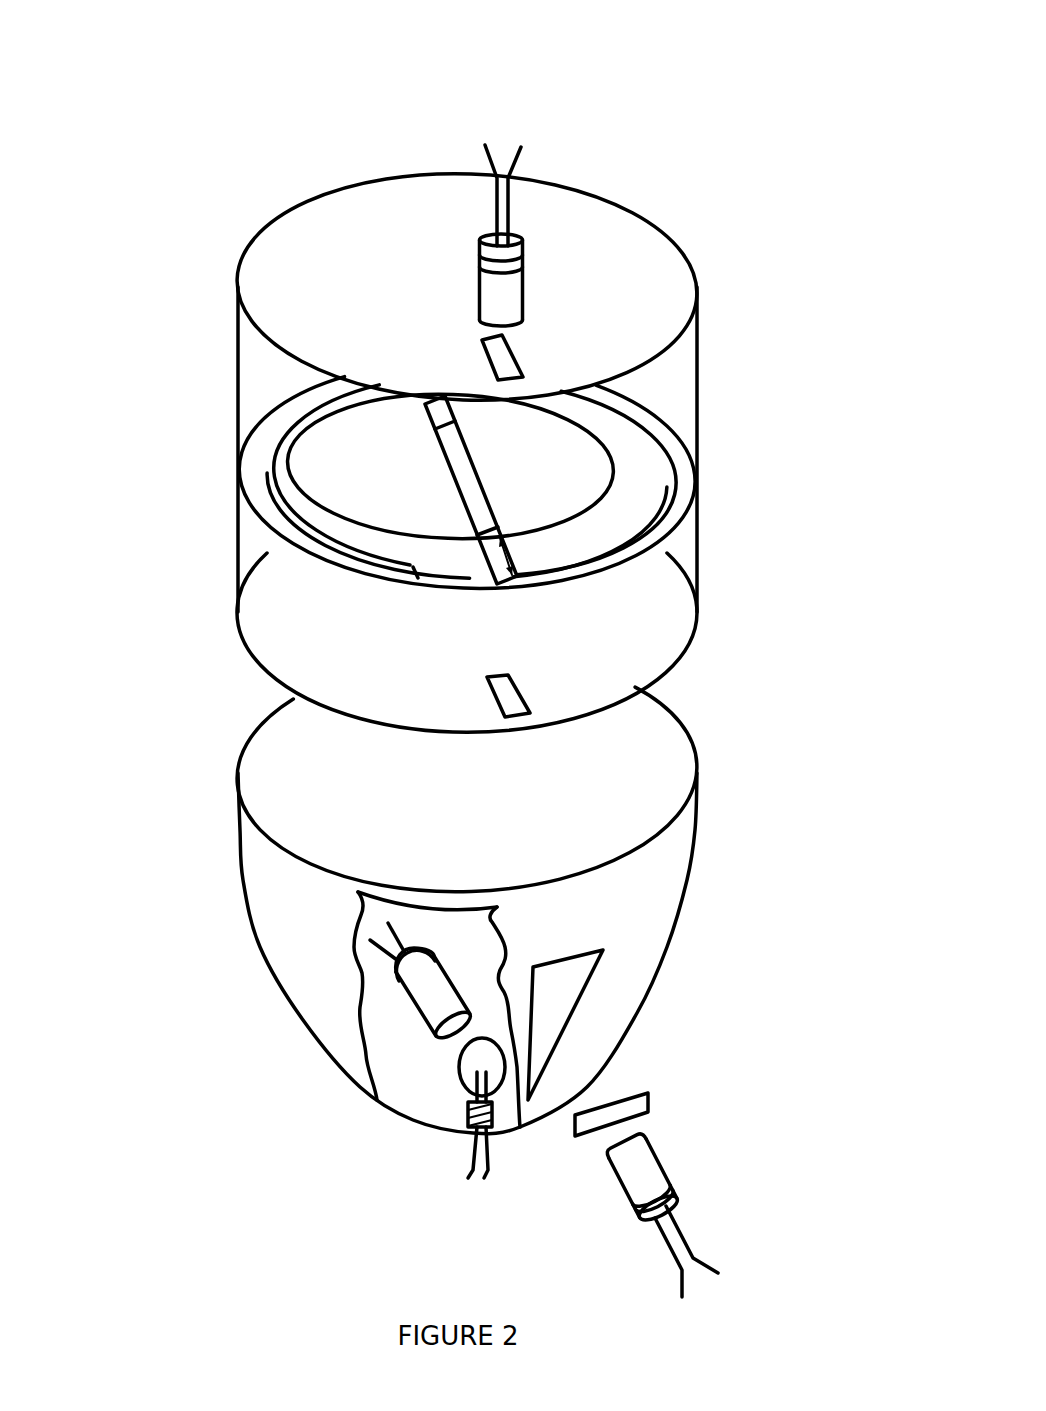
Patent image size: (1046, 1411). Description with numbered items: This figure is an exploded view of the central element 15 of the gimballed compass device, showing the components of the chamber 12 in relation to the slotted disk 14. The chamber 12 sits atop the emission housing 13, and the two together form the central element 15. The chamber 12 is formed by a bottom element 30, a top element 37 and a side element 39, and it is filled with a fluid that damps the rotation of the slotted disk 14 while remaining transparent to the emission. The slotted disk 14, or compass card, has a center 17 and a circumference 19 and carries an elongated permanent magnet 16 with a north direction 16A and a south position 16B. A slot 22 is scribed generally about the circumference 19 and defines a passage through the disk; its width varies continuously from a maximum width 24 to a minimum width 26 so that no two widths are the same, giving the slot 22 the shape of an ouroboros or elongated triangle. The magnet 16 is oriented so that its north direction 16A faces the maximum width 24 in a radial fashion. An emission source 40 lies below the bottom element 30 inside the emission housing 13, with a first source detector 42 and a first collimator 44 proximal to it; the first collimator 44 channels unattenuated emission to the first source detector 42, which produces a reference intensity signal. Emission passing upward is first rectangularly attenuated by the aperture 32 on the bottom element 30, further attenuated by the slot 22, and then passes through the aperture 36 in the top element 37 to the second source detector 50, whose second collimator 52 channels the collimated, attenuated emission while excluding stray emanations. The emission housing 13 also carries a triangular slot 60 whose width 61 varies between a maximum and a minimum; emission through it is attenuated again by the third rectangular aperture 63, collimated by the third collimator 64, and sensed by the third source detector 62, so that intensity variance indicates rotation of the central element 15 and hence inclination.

The central element 15 is at (226, 76).
The top element 37 is at (307, 233).
The second source detector 50 is at (522, 240).
The second collimator 52 is at (515, 295).
The aperture 36 is at (490, 358).
The side element 39 is at (697, 432).
The slotted disk 14 is at (335, 518).
The circumference 19 is at (335, 568).
The slot 22 is at (282, 465).
The chamber 12 is at (212, 352).
The permanent magnet 16 is at (460, 488).
The center 17 is at (458, 468).
The north direction 16A is at (490, 513).
The south position 16B is at (453, 425).
The minimum width 26 is at (472, 580).
The maximum width 24 is at (522, 556).
The bottom element 30 is at (333, 670).
The aperture 32 is at (513, 698).
The emission housing 13 is at (652, 897).
The first collimator 44 is at (437, 995).
The first source detector 42 is at (402, 966).
The emission source 40 is at (468, 1077).
The triangular slot 60 is at (562, 1027).
The triangular slot's width 61 is at (560, 997).
The third rectangular aperture 63 is at (650, 1103).
The third collimator 64 is at (645, 1163).
The third source detector 62 is at (678, 1200).